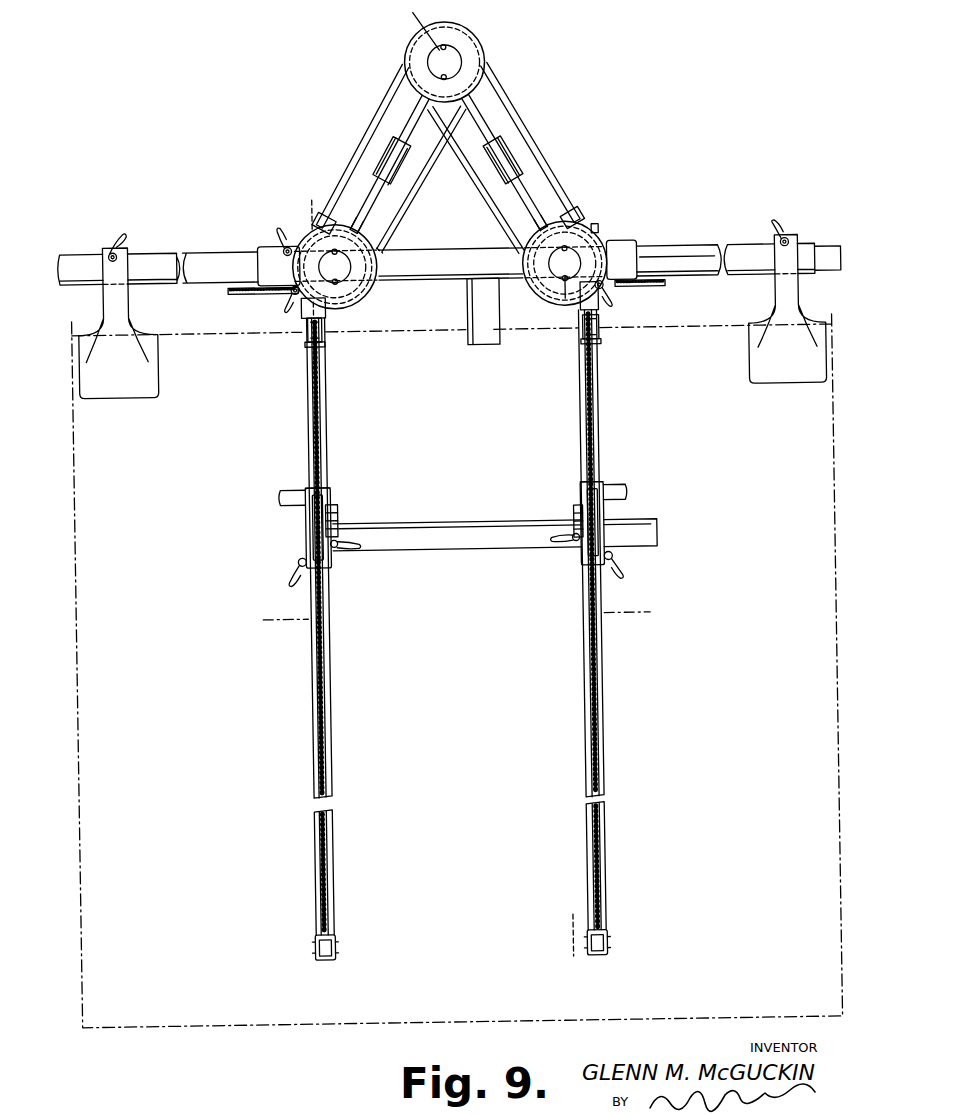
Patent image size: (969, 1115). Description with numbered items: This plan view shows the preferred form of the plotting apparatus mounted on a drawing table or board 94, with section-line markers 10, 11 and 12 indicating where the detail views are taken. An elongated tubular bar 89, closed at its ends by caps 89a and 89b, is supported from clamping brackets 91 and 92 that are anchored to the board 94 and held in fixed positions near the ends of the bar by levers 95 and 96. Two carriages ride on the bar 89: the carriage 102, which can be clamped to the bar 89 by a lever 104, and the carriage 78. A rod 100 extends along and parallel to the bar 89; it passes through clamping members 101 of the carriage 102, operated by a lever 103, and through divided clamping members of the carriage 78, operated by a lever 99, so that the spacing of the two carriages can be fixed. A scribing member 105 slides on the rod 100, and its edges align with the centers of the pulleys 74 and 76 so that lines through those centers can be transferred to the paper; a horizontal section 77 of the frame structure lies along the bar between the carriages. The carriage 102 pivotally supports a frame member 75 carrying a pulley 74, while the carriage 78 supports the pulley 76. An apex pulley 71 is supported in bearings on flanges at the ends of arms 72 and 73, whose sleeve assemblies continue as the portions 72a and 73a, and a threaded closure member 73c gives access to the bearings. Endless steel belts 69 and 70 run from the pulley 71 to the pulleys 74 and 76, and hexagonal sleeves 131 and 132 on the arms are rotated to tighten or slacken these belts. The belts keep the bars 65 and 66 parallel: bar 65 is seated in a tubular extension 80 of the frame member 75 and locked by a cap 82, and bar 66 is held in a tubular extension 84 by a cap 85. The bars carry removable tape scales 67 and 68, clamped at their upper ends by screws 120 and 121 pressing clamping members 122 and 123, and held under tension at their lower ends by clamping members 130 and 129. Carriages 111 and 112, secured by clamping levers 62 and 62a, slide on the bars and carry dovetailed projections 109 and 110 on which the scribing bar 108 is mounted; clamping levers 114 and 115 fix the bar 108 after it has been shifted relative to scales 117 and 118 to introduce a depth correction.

The section line 10- 10 is at (417, 22).
The section line 11- 11 is at (317, 213).
The section line 12- 12 is at (283, 618).
The clamping lever 62 is at (288, 583).
The clamping lever 62a is at (627, 577).
The bar 65 is at (310, 437).
The bar 66 is at (602, 415).
The scale 67 is at (331, 465).
The scale 68 is at (586, 442).
The endless tape or belt 69 is at (384, 128).
The endless tape or belt 70 is at (522, 113).
The pulley 71 is at (489, 43).
The arm 72 is at (487, 98).
The arm portion 72a is at (540, 200).
The arm 73 is at (422, 118).
The arm portion 73a is at (371, 200).
The threaded closure member 73c is at (466, 62).
The pulley 74 is at (395, 249).
The frame member 75 is at (361, 229).
The pulley 76 is at (584, 219).
The frame member 77 is at (677, 262).
The carriage 78 is at (636, 256).
The tubular extension 80 is at (327, 307).
The locking cap 82 is at (294, 244).
The tubular extension 84 is at (583, 304).
The locking cap 85 is at (604, 232).
The tubular bar 89 is at (740, 252).
The cap 89a is at (64, 256).
The cap 89b is at (845, 250).
The clamping bracket 91 is at (124, 293).
The clamping bracket 92 is at (784, 288).
The drawing table or board 94 is at (211, 1018).
The lever 95 is at (127, 230).
The lever 96 is at (781, 226).
The lever 99 is at (617, 305).
The rod 100 is at (408, 291).
The clamping members 101 is at (297, 290).
The carriage 102 is at (272, 258).
The lever 103 is at (288, 309).
The lever 104 is at (285, 233).
The scribing member 105 is at (491, 342).
The scribing bar 108 is at (398, 543).
The dovetailed projection 109 is at (333, 491).
The dovetailed projection 110 is at (582, 489).
The carriage 111 is at (313, 523).
The carriage 112 is at (601, 511).
The clamping lever 114 is at (357, 548).
The clamping lever 115 is at (558, 546).
The scale 117 is at (337, 509).
The scale 118 is at (579, 506).
The screw 120 is at (327, 340).
The screw 121 is at (588, 336).
The clamping member 122 is at (310, 342).
The clamping member 123 is at (602, 346).
The U-shaped clamping member 129 is at (595, 958).
The clamping member 130 is at (322, 960).
The hexagonal sleeve 131 is at (406, 167).
The hexagonal sleeve 132 is at (524, 153).